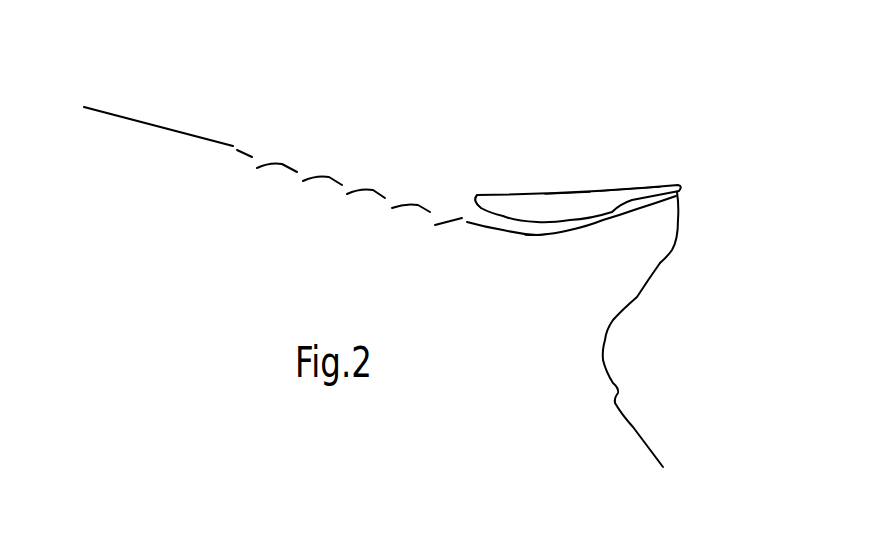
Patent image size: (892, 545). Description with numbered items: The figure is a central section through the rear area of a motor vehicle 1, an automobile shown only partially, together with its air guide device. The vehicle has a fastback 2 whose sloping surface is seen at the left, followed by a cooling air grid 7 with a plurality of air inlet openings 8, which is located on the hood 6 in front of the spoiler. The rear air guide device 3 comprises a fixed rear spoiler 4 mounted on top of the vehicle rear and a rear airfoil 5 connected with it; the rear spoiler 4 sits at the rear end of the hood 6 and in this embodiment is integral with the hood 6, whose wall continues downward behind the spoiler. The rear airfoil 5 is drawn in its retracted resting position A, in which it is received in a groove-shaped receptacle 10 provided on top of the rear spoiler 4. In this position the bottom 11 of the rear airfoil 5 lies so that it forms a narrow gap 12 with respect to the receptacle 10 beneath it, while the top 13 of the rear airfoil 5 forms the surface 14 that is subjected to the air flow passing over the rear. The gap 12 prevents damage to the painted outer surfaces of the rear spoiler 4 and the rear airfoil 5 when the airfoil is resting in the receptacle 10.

The motor vehicle 1 is at (113, 111).
The fastback 2 is at (243, 143).
The cooling air grid 7 is at (338, 181).
The air inlet openings 8 is at (439, 209).
The rear air guide device 3 is at (606, 151).
The top of the rear airfoil 13 is at (495, 190).
The rear airfoil 5 is at (567, 188).
The surface subjected to the air flow 14 is at (617, 187).
The retracted resting position A is at (647, 187).
The gap 12 is at (507, 223).
The groove-shaped receptacle 10 is at (537, 222).
The bottom of the rear airfoil 11 is at (582, 222).
The rear spoiler 4 is at (678, 224).
The hood 6 is at (637, 298).